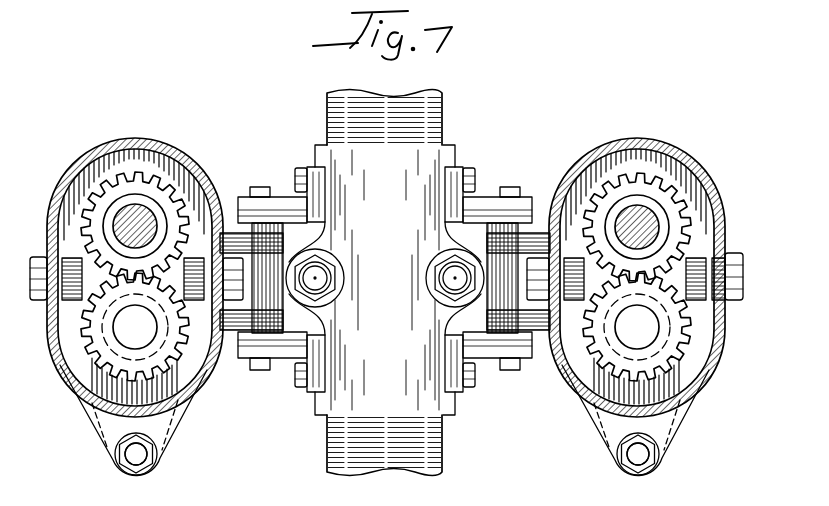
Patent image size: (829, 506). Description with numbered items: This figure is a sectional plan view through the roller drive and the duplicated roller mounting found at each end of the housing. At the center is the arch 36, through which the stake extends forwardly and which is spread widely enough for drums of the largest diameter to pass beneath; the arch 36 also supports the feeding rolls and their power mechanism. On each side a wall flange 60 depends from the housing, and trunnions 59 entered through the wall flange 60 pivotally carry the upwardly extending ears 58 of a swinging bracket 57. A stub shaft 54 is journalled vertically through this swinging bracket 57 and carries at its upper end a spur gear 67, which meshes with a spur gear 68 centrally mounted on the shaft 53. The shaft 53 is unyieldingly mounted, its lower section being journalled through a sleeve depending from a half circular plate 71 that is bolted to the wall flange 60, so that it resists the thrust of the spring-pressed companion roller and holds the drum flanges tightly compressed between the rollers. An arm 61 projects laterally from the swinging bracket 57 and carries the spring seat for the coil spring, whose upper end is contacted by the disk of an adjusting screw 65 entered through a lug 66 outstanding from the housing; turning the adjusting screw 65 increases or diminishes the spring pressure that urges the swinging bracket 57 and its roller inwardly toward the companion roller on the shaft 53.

The arch 36 is at (430, 127).
The shaft 53 is at (150, 217).
The stub shaft 54 is at (386, 327).
The swinging bracket 57 is at (687, 348).
The ears 58 is at (548, 345).
The trunnions 59 is at (546, 250).
The wall flange 60 is at (147, 148).
The arm 61 is at (100, 400).
The adjusting screw 65 is at (138, 454).
The lug 66 is at (168, 423).
The spur gear 67 is at (172, 358).
The spur gear 68 is at (160, 198).
The half circular plate 71 is at (168, 178).